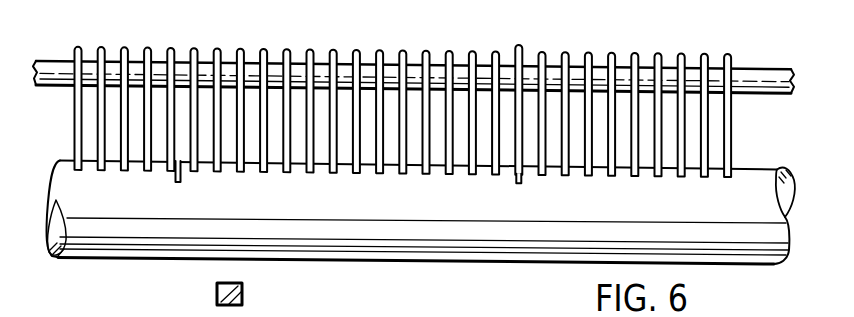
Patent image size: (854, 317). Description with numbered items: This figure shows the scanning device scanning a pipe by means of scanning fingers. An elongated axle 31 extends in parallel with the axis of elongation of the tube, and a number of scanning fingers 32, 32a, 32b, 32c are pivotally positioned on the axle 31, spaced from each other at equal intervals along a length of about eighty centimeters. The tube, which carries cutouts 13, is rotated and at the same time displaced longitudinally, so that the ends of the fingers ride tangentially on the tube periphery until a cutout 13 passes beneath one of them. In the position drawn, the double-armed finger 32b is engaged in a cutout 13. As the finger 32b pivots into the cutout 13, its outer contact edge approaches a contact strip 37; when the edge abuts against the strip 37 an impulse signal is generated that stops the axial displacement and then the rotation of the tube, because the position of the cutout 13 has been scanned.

The axle 31 is at (761, 80).
The scanning finger 32 is at (286, 49).
The scanning finger 32a is at (427, 49).
The scanning finger 32b is at (522, 46).
The pin 32c is at (612, 52).
The cutout 13 is at (516, 186).
The contact strip 37 is at (243, 293).